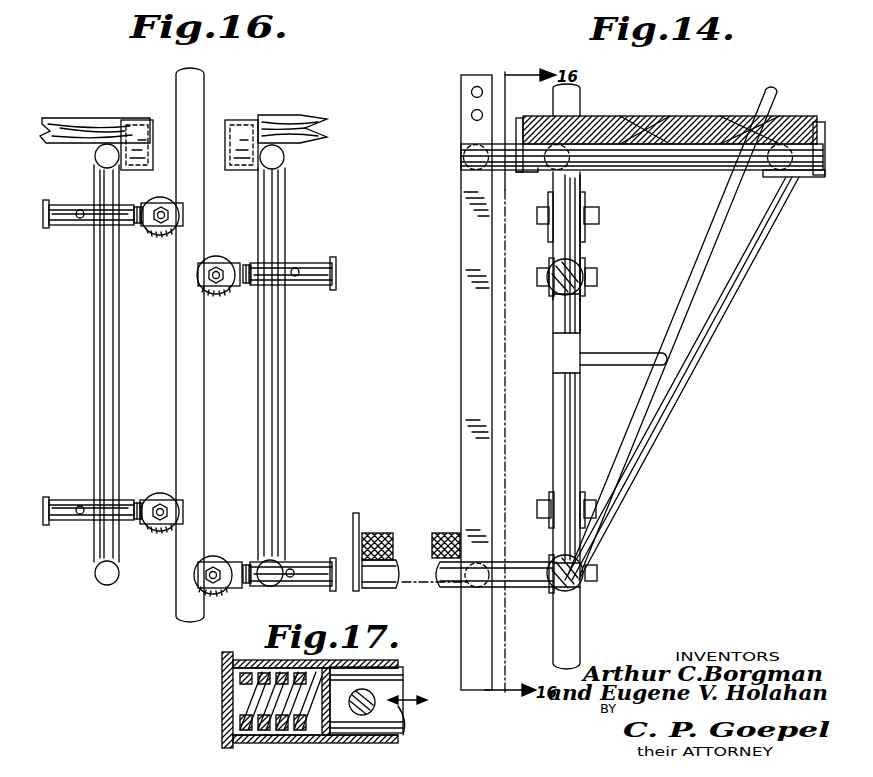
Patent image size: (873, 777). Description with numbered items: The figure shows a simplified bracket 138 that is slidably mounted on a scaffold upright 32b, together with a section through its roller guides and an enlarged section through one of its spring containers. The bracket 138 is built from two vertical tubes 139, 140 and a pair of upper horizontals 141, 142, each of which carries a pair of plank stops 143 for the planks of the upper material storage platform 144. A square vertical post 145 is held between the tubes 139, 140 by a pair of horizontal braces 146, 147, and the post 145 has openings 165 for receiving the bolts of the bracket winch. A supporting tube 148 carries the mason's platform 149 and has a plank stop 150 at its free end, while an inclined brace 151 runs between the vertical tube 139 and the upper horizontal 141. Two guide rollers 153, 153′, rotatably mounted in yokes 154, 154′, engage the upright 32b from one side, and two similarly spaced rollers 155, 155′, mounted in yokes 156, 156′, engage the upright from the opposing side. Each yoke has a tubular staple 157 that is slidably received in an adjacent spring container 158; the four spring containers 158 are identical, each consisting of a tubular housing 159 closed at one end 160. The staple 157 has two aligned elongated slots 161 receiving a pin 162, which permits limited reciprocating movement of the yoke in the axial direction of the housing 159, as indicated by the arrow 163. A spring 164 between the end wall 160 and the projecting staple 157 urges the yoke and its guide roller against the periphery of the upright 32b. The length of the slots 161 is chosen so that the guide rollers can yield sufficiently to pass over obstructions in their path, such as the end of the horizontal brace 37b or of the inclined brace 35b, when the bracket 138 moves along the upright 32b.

In FIG. 14, the bracket 138 is at (705, 380).
In FIG. 16, the vertical tube 139 is at (286, 378).
In FIG. 14, the vertical tube 139 is at (581, 320).
In FIG. 16, the vertical tube 140 is at (119, 378).
In FIG. 16, the upper horizontal 141 is at (285, 158).
In FIG. 14, the upper horizontal 141 is at (650, 170).
In FIG. 16, the upper horizontal 142 is at (95, 158).
In FIG. 16, the plank stop 143 is at (152, 122).
In FIG. 14, the plank stop 143 is at (516, 122).
In FIG. 16, the upper material storage platform 144 is at (95, 117).
In FIG. 14, the upper material storage platform 144 is at (690, 116).
In FIG. 14, the square vertical post 145 is at (468, 282).
In FIG. 14, the horizontal brace 146 is at (466, 156).
In FIG. 14, the horizontal brace 147 is at (492, 568).
In FIG. 16, the supporting tube 148 is at (396, 586).
In FIG. 16, the mason's platform 149 is at (470, 533).
In FIG. 14, the mason's platform 149 is at (447, 533).
In FIG. 16, the plank stop 150 is at (352, 517).
In FIG. 14, the inclined brace 151 is at (713, 316).
In FIG. 16, the guide roller 153 is at (210, 256).
In FIG. 14, the guide roller 153 is at (584, 262).
In FIG. 16, the guide roller 153′ is at (211, 555).
In FIG. 14, the guide roller 153′ is at (548, 590).
In FIG. 16, the yoke 154 is at (238, 288).
In FIG. 14, the yoke 154 is at (552, 260).
In FIG. 16, the yoke 154′ is at (226, 567).
In FIG. 14, the yoke 154′ is at (595, 578).
In FIG. 16, the guide roller 155 is at (165, 240).
In FIG. 14, the guide roller 155 is at (592, 207).
In FIG. 16, the guide roller 155′ is at (165, 491).
In FIG. 14, the guide roller 155′ is at (587, 494).
In FIG. 16, the yoke 156 is at (146, 228).
In FIG. 14, the yoke 156 is at (542, 208).
In FIG. 16, the yoke 156′ is at (144, 500).
In FIG. 14, the yoke 156′ is at (545, 500).
In FIG. 16, the staple 157 is at (148, 194).
In FIG. 17, the staple 157 is at (400, 693).
In FIG. 16, the spring container 158 is at (60, 232).
In FIG. 17, the spring container 158 is at (243, 649).
In FIG. 16, the tubular housing 159 is at (66, 227).
In FIG. 17, the tubular housing 159 is at (296, 737).
In FIG. 16, the closed end 160 is at (80, 205).
In FIG. 17, the closed end 160 is at (222, 707).
In FIG. 14, the closed end 160 is at (582, 294).
In FIG. 17, the elongated slot 161 is at (405, 735).
In FIG. 16, the pin 162 is at (80, 220).
In FIG. 17, the pin 162 is at (367, 713).
In FIG. 17, the arrow 163 is at (412, 706).
In FIG. 17, the spring 164 is at (266, 738).
In FIG. 14, the opening 165 is at (471, 113).
In FIG. 16, the upright 32b is at (205, 378).
In FIG. 14, the upright 32b is at (581, 99).
In FIG. 14, the inclined brace 35b is at (708, 242).
In FIG. 14, the horizontal brace 37b is at (610, 362).